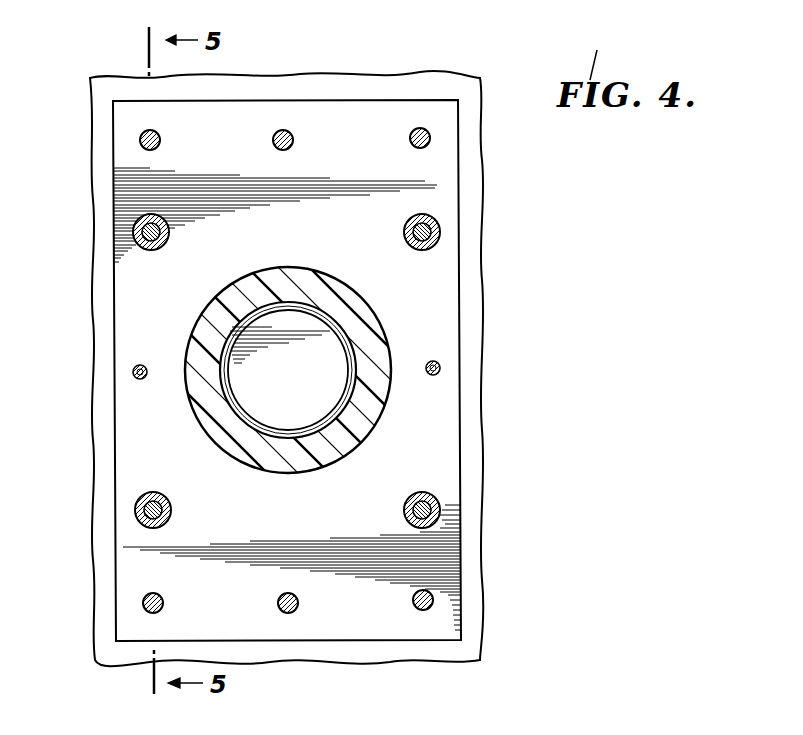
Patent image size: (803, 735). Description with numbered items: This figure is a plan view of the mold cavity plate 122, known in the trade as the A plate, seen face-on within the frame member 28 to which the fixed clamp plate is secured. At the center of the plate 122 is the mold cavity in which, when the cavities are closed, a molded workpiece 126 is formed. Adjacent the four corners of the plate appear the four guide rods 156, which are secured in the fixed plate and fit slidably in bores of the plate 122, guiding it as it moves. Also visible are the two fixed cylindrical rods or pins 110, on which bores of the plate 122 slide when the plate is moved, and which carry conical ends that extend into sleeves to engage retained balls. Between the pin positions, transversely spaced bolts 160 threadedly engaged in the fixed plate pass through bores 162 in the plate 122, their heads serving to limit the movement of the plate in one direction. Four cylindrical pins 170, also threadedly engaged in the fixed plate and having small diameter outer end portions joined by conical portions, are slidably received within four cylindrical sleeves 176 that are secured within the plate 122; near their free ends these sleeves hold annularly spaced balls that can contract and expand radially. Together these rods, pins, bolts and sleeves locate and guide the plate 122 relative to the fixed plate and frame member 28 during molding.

The frame member 28 is at (447, 85).
The cylindrical rods or pins 110 is at (287, 131).
The mold cavity plate 122 is at (287, 370).
The molded workpiece 126 is at (300, 283).
The guide rods 156 is at (142, 140).
The bolts 160 is at (134, 375).
The bores 162 is at (147, 364).
The cylindrical pins 170 is at (143, 229).
The cylindrical sleeves 176 is at (148, 213).